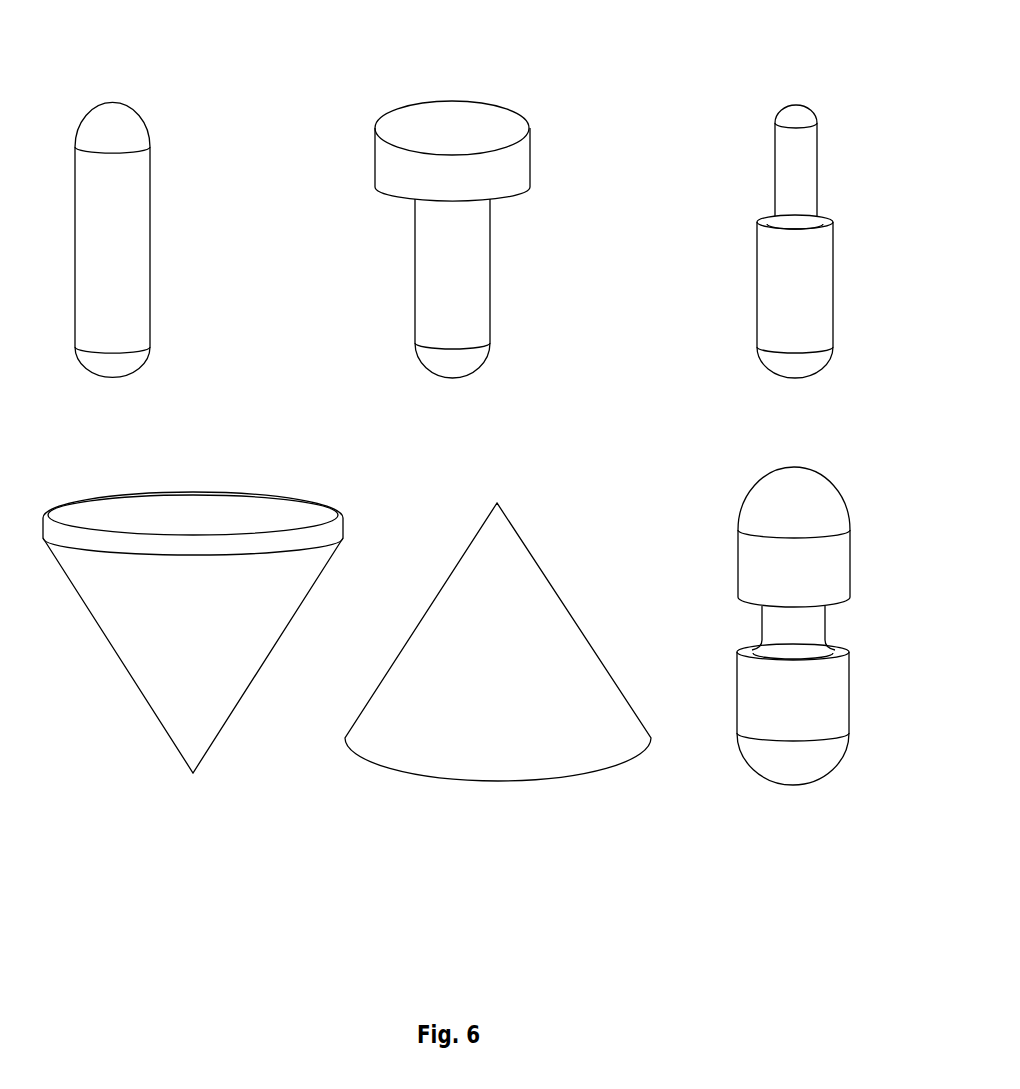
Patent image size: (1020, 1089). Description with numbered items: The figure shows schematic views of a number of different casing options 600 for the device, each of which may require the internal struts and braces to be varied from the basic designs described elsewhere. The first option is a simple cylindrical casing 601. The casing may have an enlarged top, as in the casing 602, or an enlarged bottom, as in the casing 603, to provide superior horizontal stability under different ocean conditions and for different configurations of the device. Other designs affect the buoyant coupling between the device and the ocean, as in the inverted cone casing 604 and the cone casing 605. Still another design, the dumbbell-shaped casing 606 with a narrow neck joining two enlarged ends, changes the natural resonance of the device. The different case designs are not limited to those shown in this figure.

The casing options 600 is at (490, 72).
The basic casing design 601 is at (123, 237).
The casing with enlarged top 602 is at (462, 222).
The casing with enlarged bottom 603 is at (787, 243).
The inverted cone casing 604 is at (215, 650).
The cone casing 605 is at (543, 700).
The dumbbell casing 606 is at (770, 552).